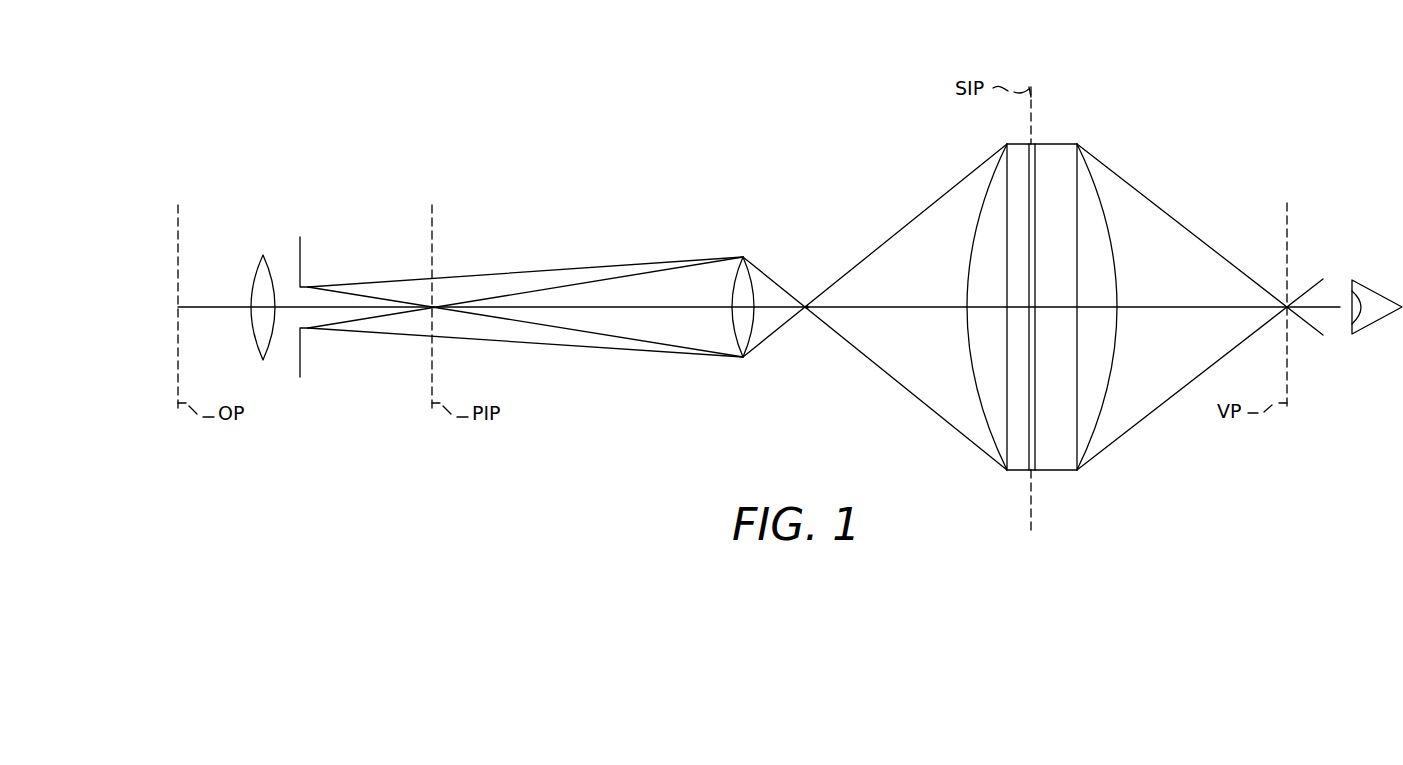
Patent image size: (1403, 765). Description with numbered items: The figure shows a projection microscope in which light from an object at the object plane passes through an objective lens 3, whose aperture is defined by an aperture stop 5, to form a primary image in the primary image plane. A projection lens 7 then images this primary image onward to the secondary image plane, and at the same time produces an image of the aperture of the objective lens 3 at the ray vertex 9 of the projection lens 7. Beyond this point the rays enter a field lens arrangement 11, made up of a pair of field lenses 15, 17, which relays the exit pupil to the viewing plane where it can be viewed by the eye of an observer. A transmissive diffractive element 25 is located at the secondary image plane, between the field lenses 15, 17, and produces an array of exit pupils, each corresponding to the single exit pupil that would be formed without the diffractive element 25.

The objective lens 3 is at (259, 266).
The aperture stop 5 is at (303, 358).
The projection lens 7 is at (736, 265).
The ray vertex 9 is at (807, 311).
The field lens arrangement 11 is at (1044, 304).
The field lens 15 is at (1003, 472).
The field lens 17 is at (1083, 472).
The diffractive element 25 is at (1037, 449).